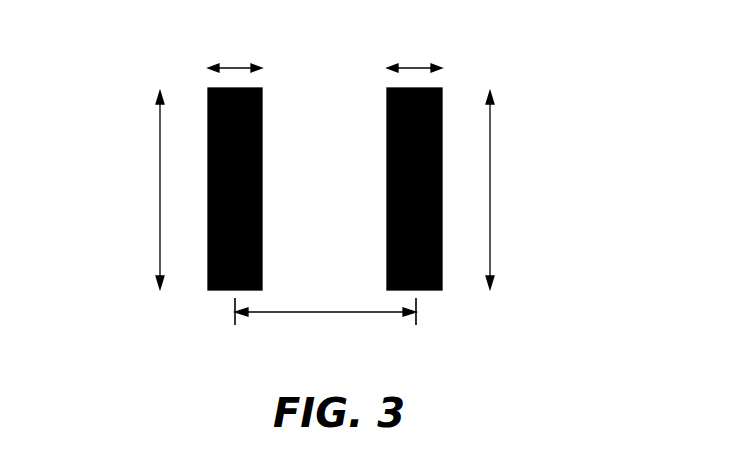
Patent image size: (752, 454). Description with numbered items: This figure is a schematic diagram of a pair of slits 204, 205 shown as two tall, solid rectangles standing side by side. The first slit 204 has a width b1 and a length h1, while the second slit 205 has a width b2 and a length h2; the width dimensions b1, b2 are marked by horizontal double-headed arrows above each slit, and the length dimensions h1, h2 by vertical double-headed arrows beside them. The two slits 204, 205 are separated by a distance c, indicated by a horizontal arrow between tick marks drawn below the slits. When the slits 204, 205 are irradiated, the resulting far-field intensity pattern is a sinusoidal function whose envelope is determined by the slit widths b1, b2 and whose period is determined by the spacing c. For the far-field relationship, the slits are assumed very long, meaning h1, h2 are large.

The slit 204 is at (208, 143).
The slit 205 is at (442, 148).
The width of first slit b1 is at (235, 52).
The width of second slit b2 is at (414, 52).
The length of first slit h1 is at (148, 190).
The length of second slit h2 is at (502, 190).
The distance between slits c is at (325, 324).